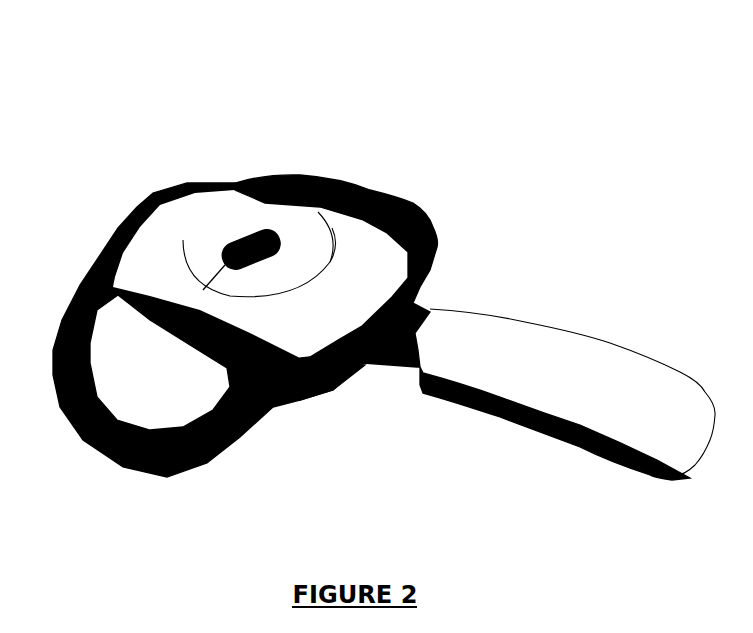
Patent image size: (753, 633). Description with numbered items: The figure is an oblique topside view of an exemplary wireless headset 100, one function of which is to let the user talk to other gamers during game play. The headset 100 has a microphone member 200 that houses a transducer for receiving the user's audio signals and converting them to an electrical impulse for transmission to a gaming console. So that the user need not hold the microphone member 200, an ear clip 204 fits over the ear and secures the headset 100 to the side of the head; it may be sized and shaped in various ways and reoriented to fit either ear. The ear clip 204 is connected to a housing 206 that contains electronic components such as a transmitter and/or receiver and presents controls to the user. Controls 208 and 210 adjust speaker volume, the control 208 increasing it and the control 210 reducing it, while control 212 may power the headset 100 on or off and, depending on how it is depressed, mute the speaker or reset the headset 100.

The wireless headset 100 is at (315, 37).
The microphone member 200 is at (506, 315).
The ear clip 204 is at (107, 433).
The housing 206 is at (153, 233).
The control 208 is at (213, 225).
The control 210 is at (313, 222).
The control 212 is at (249, 237).